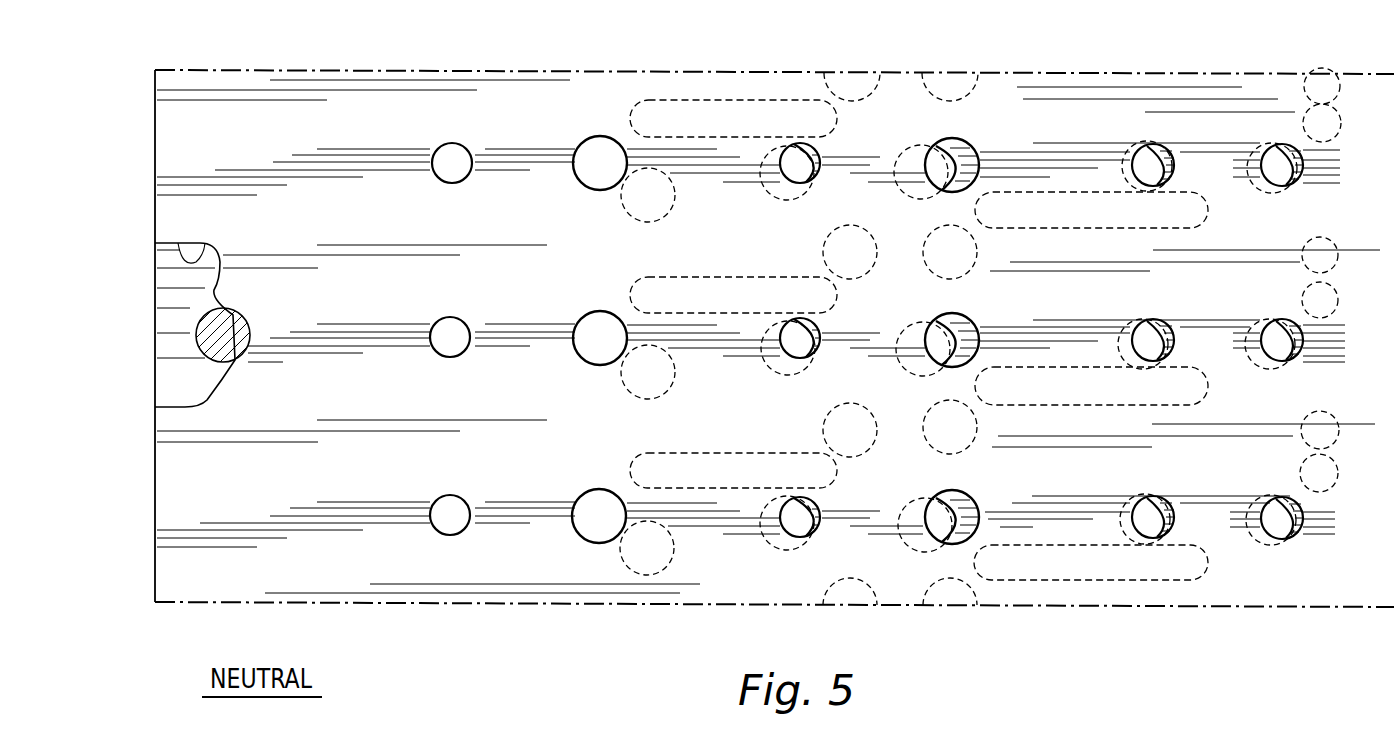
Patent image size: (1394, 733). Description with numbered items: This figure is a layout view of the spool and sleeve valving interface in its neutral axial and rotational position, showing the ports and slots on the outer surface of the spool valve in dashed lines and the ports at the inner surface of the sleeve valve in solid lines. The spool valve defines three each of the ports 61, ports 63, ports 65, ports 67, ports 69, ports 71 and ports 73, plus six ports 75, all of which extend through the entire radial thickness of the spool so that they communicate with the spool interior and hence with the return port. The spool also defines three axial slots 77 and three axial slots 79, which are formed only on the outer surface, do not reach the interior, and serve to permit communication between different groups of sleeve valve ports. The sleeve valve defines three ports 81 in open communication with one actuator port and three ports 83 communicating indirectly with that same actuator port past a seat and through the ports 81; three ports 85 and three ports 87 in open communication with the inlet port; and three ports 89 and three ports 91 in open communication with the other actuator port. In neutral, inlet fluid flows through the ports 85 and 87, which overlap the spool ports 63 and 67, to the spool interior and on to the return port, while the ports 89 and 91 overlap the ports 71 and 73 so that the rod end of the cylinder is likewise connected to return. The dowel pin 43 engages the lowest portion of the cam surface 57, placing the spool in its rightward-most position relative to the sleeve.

The dowel pin 43 is at (225, 337).
The cam surface 57 is at (207, 252).
The ports 61 is at (652, 552).
The ports 63 is at (785, 540).
The ports 65 is at (885, 642).
The ports 67 is at (1002, 473).
The ports 69 is at (953, 598).
The ports 71 is at (1117, 345).
The ports 73 is at (1253, 505).
The ports 75 is at (1322, 433).
The axial slots 77 is at (738, 112).
The axial slots 79 is at (1090, 215).
The ports 81 is at (455, 165).
The ports 83 is at (597, 522).
The ports 85 is at (793, 168).
The ports 87 is at (963, 148).
The ports 89 is at (1165, 160).
The ports 91 is at (1290, 180).